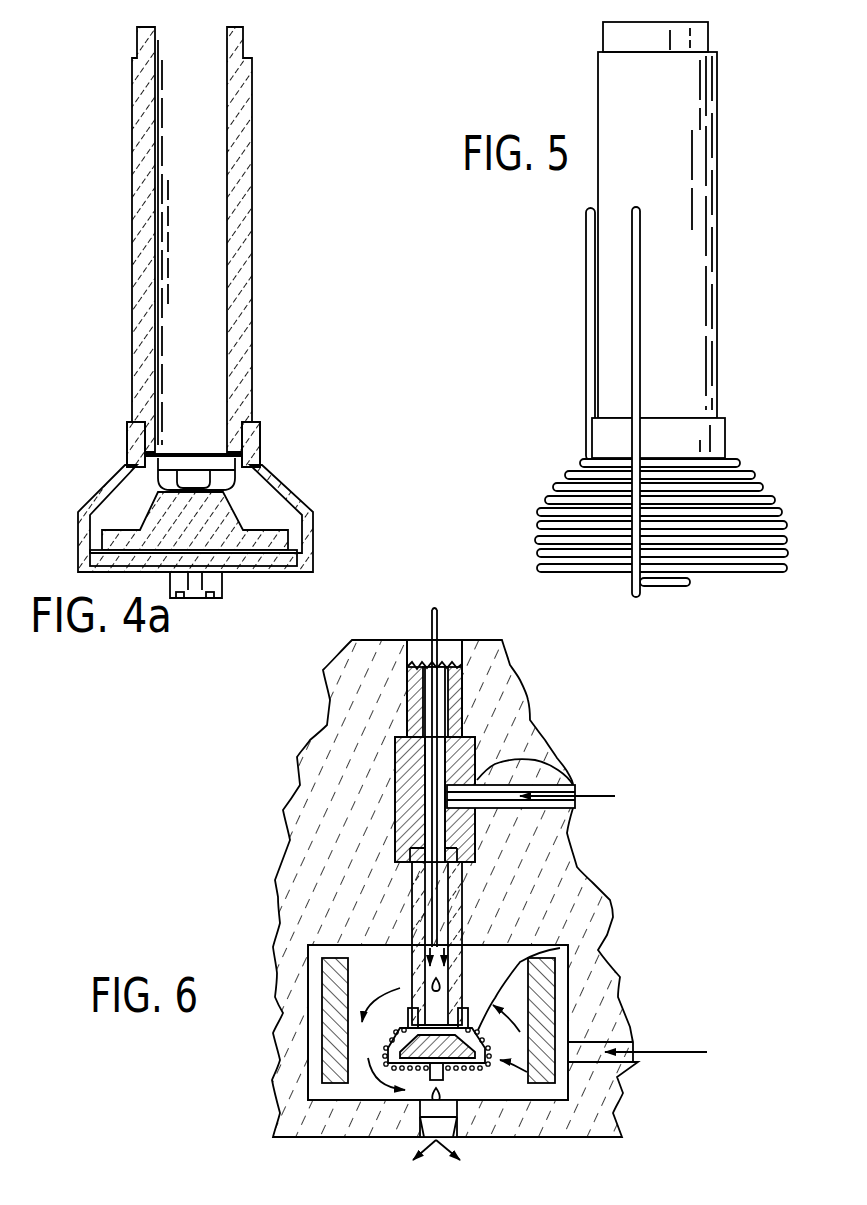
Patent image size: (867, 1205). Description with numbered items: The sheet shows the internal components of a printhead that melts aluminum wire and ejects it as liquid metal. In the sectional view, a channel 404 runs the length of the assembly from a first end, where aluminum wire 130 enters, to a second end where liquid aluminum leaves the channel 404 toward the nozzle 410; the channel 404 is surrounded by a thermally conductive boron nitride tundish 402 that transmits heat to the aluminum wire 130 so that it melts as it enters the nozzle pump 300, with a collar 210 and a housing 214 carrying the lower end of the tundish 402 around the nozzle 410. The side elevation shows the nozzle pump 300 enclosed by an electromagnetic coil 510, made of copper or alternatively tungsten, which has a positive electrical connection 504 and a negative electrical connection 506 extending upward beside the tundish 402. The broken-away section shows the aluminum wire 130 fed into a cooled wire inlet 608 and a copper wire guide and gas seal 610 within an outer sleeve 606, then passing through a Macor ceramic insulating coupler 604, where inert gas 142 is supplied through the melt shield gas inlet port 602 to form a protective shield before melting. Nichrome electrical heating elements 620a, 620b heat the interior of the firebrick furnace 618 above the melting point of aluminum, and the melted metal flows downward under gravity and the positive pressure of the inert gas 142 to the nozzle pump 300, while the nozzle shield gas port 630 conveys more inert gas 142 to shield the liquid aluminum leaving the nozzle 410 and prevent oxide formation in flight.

In FIG. 6, the aluminum wire 130 is at (440, 630).
In FIG. 6, the inert gas 142 is at (580, 796).
In FIG. 4A, the collar 210 is at (270, 475).
In FIG. 5, the collar 210 is at (725, 438).
In FIG. 4A, the housing 214 is at (313, 528).
In FIG. 4A, the nozzle pump 300 is at (92, 470).
In FIG. 6, the nozzle pump 300 is at (362, 1050).
In FIG. 4A, the tundish 402 is at (253, 288).
In FIG. 5, the tundish 402 is at (717, 126).
In FIG. 6, the tundish 402 is at (460, 890).
In FIG. 4A, the channel 404 is at (205, 204).
In FIG. 4A, the nozzle 410 is at (222, 592).
In FIG. 6, the nozzle 410 is at (475, 1125).
In FIG. 5, the positive electrical connection 504 is at (640, 250).
In FIG. 5, the negative electrical connection 506 is at (586, 285).
In FIG. 5, the electromagnetic coil 510 is at (540, 496).
In FIG. 6, the electromagnetic coil 510 is at (520, 933).
In FIG. 6, the melt shield gas inlet port 602 is at (565, 772).
In FIG. 6, the insulating coupler 604 is at (395, 783).
In FIG. 6, the outer sleeve 606 is at (462, 718).
In FIG. 6, the cooled wire inlet 608 is at (420, 632).
In FIG. 6, the wire guide and gas seal 610 is at (462, 690).
In FIG. 6, the furnace 618 is at (365, 818).
In FIG. 6, the electrical heating element 620a is at (327, 981).
In FIG. 6, the electrical heating element 620b is at (548, 978).
In FIG. 6, the nozzle shield gas port 630 is at (627, 1040).